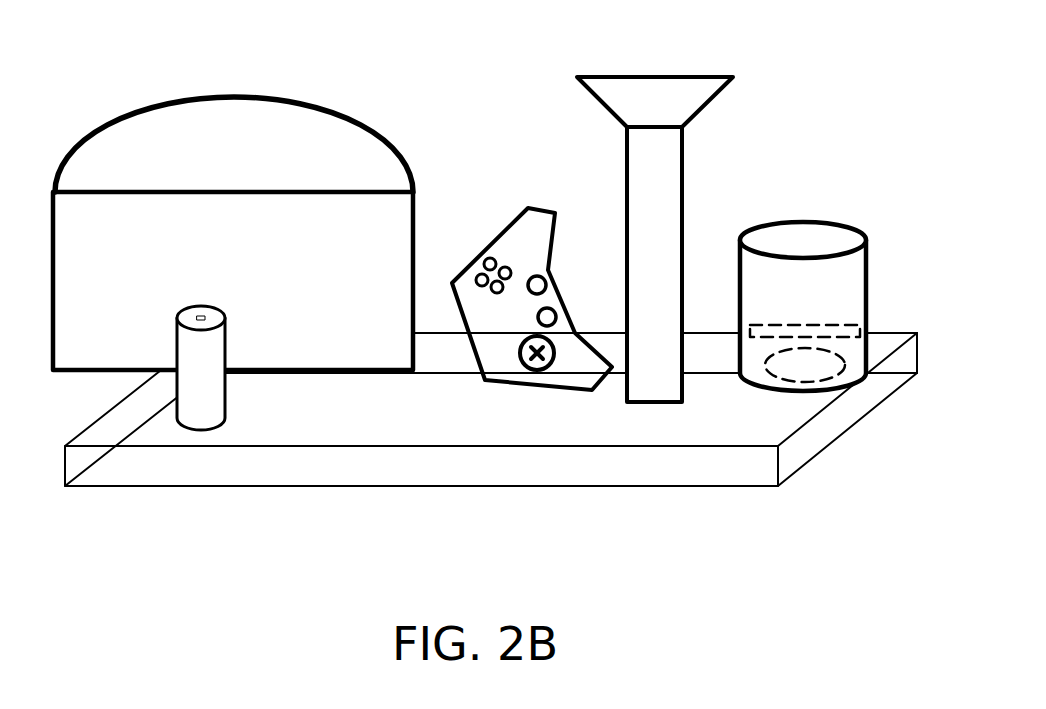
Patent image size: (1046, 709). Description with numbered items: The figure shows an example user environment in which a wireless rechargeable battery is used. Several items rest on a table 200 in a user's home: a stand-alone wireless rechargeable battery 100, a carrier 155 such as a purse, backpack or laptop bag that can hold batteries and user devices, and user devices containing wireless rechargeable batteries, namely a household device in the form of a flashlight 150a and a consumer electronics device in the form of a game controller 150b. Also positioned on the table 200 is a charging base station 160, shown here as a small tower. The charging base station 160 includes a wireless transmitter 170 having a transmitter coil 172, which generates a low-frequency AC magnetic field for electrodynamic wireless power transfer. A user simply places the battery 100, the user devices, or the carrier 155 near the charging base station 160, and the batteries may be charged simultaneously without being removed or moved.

The wireless rechargeable battery 100 is at (192, 387).
The carrier 155 is at (207, 96).
The table 200 is at (258, 428).
The flashlight 150a is at (713, 73).
The game controller 150b is at (497, 232).
The charging base station 160 is at (810, 316).
The wireless transmitter 170 is at (843, 333).
The transmitter coil 172 is at (773, 360).